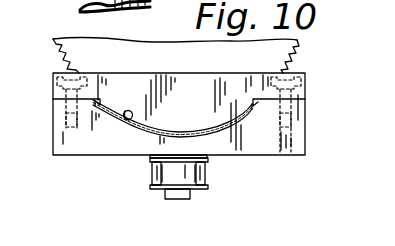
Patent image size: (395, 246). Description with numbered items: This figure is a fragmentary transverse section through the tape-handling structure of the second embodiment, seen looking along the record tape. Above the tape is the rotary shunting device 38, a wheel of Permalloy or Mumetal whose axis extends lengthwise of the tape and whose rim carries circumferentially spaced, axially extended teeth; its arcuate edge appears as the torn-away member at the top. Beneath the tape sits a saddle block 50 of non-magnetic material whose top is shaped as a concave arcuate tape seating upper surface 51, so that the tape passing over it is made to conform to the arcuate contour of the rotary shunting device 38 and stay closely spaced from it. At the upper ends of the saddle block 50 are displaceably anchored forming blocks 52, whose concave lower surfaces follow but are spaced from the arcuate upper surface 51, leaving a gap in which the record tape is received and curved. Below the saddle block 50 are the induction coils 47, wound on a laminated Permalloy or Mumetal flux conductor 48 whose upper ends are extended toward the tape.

The rotary shunting device 38 is at (303, 53).
The induction coils 47 is at (190, 175).
The flux conductor 48 is at (180, 194).
The saddle blocks 50 is at (84, 146).
The concave arcuate tape seating upper surface 51 is at (92, 99).
The forming blocks 52 is at (206, 101).